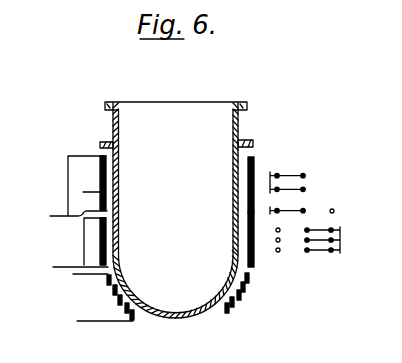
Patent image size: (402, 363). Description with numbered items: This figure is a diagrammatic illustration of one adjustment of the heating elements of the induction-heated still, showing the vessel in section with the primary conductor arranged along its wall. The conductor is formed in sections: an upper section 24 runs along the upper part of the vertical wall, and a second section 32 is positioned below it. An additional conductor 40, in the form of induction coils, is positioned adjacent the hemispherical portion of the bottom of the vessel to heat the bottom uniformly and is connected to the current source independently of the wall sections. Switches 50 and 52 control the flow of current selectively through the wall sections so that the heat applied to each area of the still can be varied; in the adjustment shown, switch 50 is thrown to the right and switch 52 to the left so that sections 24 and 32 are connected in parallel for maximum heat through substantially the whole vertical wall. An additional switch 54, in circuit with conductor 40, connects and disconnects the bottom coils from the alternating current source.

The upper section of the conductor 24 is at (264, 155).
The second section of the conductor 32 is at (256, 261).
The additional switch 54 is at (297, 170).
The switch 52 is at (295, 207).
The switch 50 is at (320, 255).
The additional conductor 40 is at (242, 309).